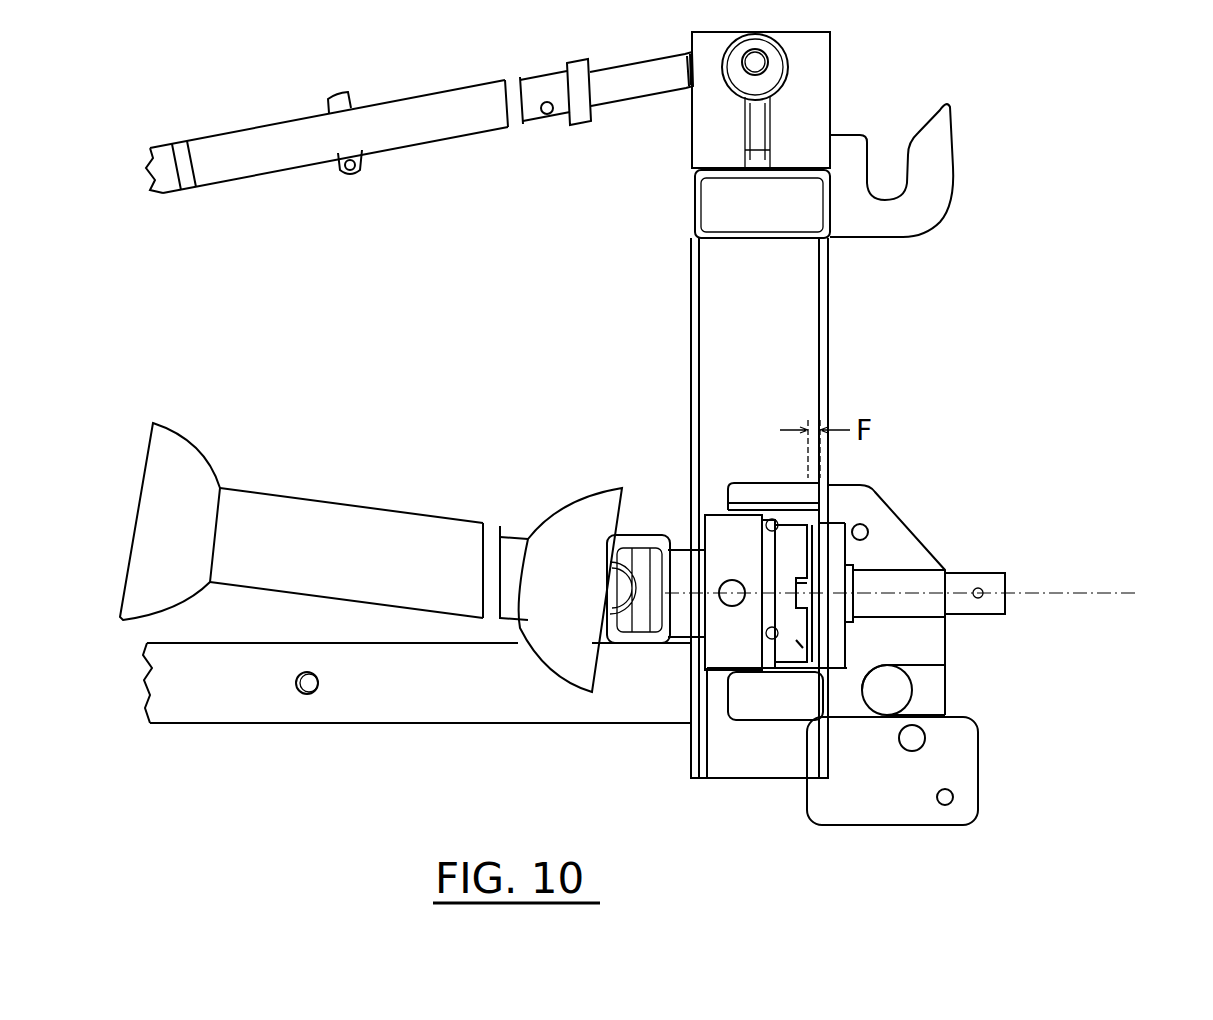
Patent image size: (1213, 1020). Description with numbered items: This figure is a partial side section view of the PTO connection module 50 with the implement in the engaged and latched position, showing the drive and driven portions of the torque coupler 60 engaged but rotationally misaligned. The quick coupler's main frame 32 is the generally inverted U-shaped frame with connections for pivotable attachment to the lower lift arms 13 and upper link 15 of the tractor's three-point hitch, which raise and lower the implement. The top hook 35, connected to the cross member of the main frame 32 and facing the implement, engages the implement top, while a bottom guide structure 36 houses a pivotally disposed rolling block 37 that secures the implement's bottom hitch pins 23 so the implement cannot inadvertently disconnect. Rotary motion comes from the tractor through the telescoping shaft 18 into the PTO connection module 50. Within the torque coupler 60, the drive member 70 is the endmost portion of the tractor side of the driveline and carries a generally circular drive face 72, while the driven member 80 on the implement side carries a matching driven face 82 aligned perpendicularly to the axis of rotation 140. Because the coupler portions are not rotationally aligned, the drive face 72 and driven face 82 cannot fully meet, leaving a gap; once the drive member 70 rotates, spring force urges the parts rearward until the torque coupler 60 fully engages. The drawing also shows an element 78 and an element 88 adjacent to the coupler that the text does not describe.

The support bar 13 is at (420, 708).
The adjustment rod 15 is at (420, 135).
The crank shaft 18 is at (255, 507).
The pivot bushing 23 is at (897, 688).
The upright housing 32 is at (735, 327).
The hook bracket 35 is at (930, 205).
The mounting plate 36 is at (963, 758).
The pivot cylinder 37 is at (937, 693).
The coupling assembly 50 is at (666, 702).
The bracket 60 is at (866, 463).
The guide block 70 is at (795, 530).
The locking tab 72 is at (805, 653).
The coupling plate 78 is at (806, 590).
The latch plate 80 is at (837, 553).
The detent 82 is at (834, 638).
The pin 88 is at (813, 538).
The drive shaft 140 is at (1130, 590).